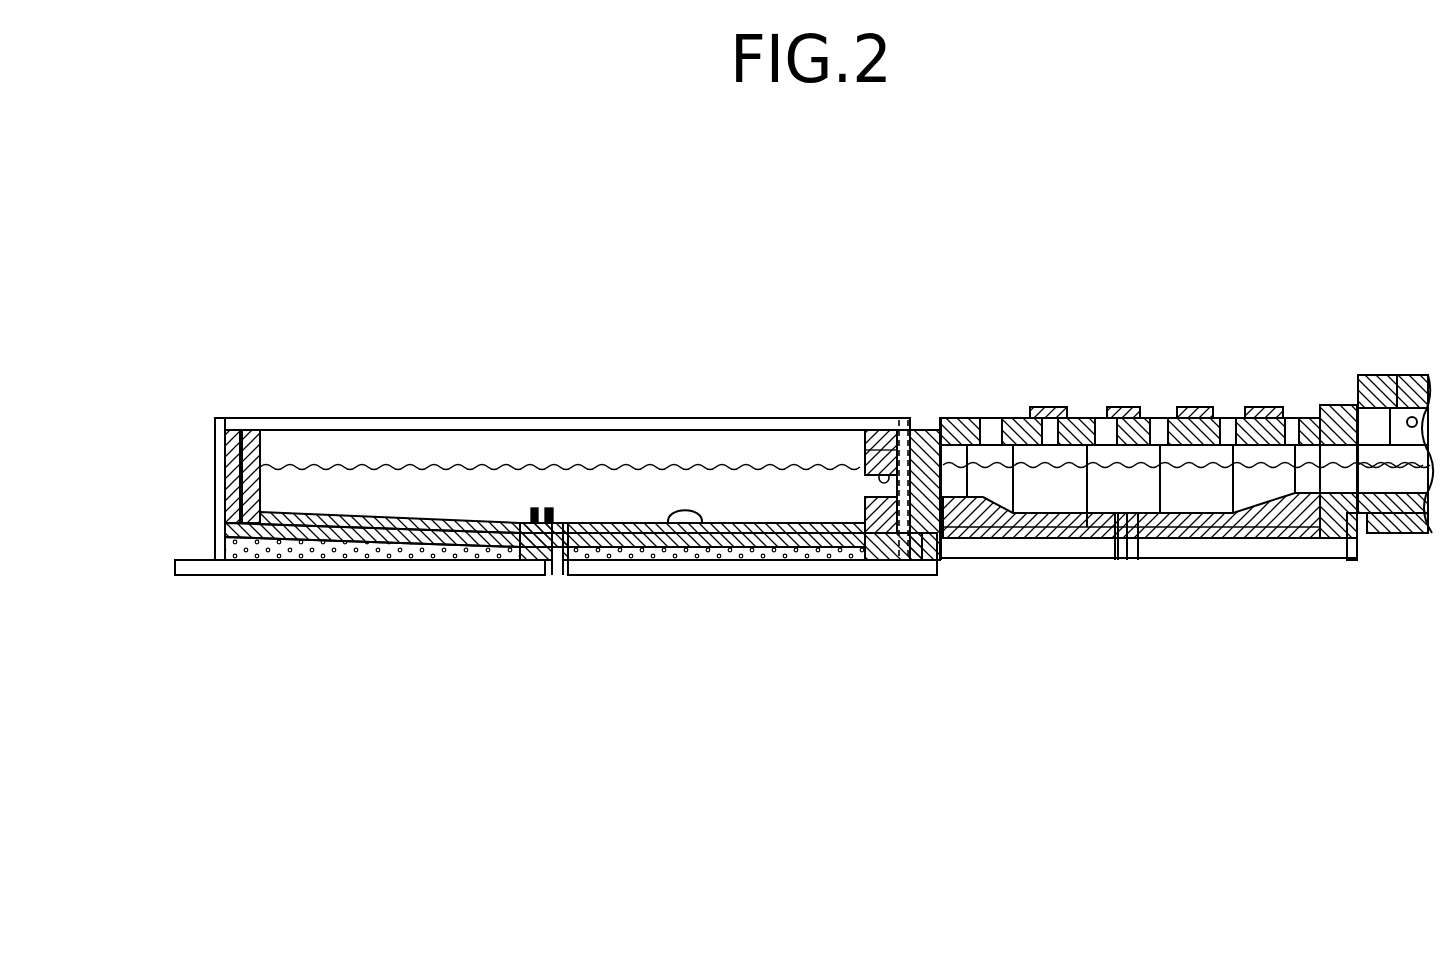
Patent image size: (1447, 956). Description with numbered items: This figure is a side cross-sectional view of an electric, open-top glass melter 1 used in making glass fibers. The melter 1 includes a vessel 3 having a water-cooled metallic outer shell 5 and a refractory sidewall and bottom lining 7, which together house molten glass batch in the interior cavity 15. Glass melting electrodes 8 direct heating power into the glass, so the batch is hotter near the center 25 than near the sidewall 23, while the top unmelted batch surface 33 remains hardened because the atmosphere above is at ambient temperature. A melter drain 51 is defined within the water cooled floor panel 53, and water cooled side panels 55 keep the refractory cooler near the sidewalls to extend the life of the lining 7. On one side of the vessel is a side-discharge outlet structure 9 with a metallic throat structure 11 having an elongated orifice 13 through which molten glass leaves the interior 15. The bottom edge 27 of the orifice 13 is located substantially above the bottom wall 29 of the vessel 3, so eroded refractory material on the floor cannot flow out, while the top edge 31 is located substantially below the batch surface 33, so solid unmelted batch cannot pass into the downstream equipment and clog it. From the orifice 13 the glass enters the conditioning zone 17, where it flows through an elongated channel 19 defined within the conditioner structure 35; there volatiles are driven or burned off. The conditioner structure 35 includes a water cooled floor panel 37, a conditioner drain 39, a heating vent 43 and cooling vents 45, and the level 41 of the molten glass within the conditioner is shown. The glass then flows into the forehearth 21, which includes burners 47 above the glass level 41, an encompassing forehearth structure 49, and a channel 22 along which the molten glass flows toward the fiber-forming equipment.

The melter 1 is at (578, 298).
The vessel 3 is at (215, 501).
The outer shell 5 is at (217, 457).
The refractory sidewall and bottom lining 7 is at (258, 440).
The glass melting electrodes 8 is at (535, 508).
The side-discharge outlet structure 9 is at (882, 390).
The throat structure 11 is at (863, 450).
The orifice 13 is at (867, 482).
The interior cavity 15 is at (500, 509).
The conditioning zone 17 is at (942, 378).
The elongated chamber or channel 19 is at (1198, 495).
The forehearth 21 is at (1405, 358).
The channel 22 is at (1343, 560).
The sidewall 23 is at (260, 478).
The center 25 is at (578, 510).
The bottom edge 27 is at (865, 492).
The bottom wall 29 is at (672, 560).
The top edge 31 is at (885, 475).
The top unmelted batch surface 33 is at (462, 465).
The conditioner structure 35 is at (1060, 560).
The water cooled floor panel 37 is at (1097, 550).
The conditioner drain 39 is at (1126, 548).
The level of molten glass 41 is at (966, 460).
The heating vent 43 is at (997, 420).
The cooling vents 45 is at (1110, 406).
The burners 47 is at (1397, 400).
The forehearth structure 49 is at (1405, 533).
The melter drain 51 is at (557, 568).
The water cooled floor panel 53 is at (440, 573).
The water cooled side panels 55 is at (219, 430).